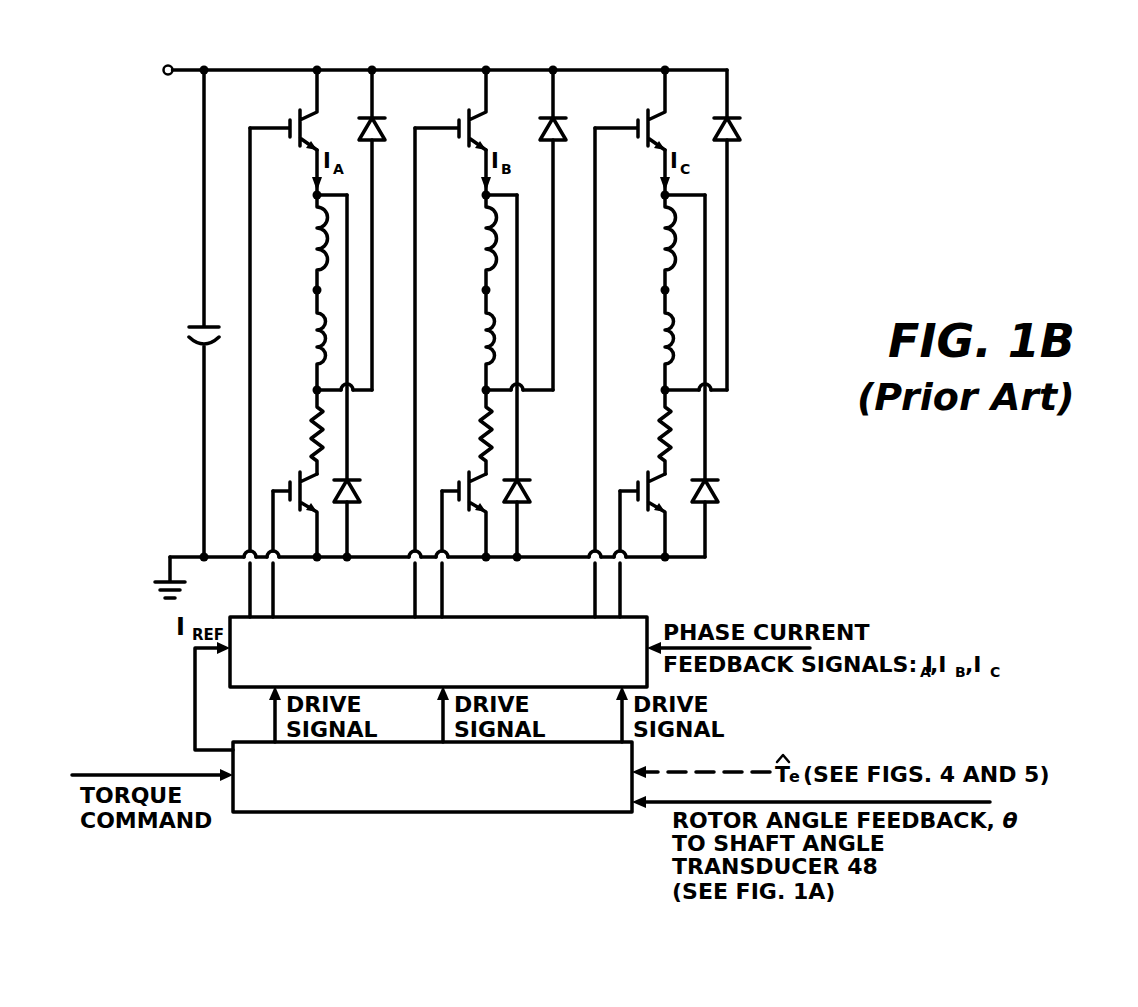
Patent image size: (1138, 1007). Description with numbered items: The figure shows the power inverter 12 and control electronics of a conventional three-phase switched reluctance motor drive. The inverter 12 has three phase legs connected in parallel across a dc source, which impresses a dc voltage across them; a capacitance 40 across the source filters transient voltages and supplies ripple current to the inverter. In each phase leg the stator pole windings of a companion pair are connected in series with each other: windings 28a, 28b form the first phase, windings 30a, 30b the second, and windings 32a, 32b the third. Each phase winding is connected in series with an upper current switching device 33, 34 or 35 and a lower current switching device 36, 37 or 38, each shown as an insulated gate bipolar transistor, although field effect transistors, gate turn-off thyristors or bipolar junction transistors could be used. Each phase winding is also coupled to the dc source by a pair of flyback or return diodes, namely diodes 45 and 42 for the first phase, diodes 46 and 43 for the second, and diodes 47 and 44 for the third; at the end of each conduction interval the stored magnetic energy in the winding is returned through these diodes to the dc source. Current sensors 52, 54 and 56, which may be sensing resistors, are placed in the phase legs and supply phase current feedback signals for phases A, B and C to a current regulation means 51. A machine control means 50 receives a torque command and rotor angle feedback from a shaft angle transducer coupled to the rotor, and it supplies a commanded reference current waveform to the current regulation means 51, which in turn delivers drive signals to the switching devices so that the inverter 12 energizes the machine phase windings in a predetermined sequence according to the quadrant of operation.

The power inverter 12 is at (824, 117).
The stator pole winding 28a is at (315, 240).
The stator pole winding 28b is at (317, 323).
The stator pole winding 30a is at (482, 240).
The stator pole winding 30b is at (486, 323).
The stator pole winding 32a is at (662, 240).
The stator pole winding 32b is at (665, 323).
The upper current switching device 33 is at (311, 112).
The upper current switching device 34 is at (479, 112).
The upper current switching device 35 is at (657, 112).
The lower current switching device 36 is at (309, 472).
The lower current switching device 37 is at (481, 472).
The lower current switching device 38 is at (658, 472).
The capacitance 40 is at (188, 324).
The flyback diode 42 is at (357, 128).
The flyback diode 43 is at (540, 128).
The flyback diode 44 is at (742, 148).
The flyback diode 45 is at (360, 490).
The flyback diode 46 is at (533, 490).
The flyback diode 47 is at (710, 505).
The machine control means 50 is at (548, 814).
The current regulation means 51 is at (646, 616).
The current sensor 52 is at (311, 423).
The current sensor 54 is at (481, 423).
The current sensor 56 is at (655, 423).